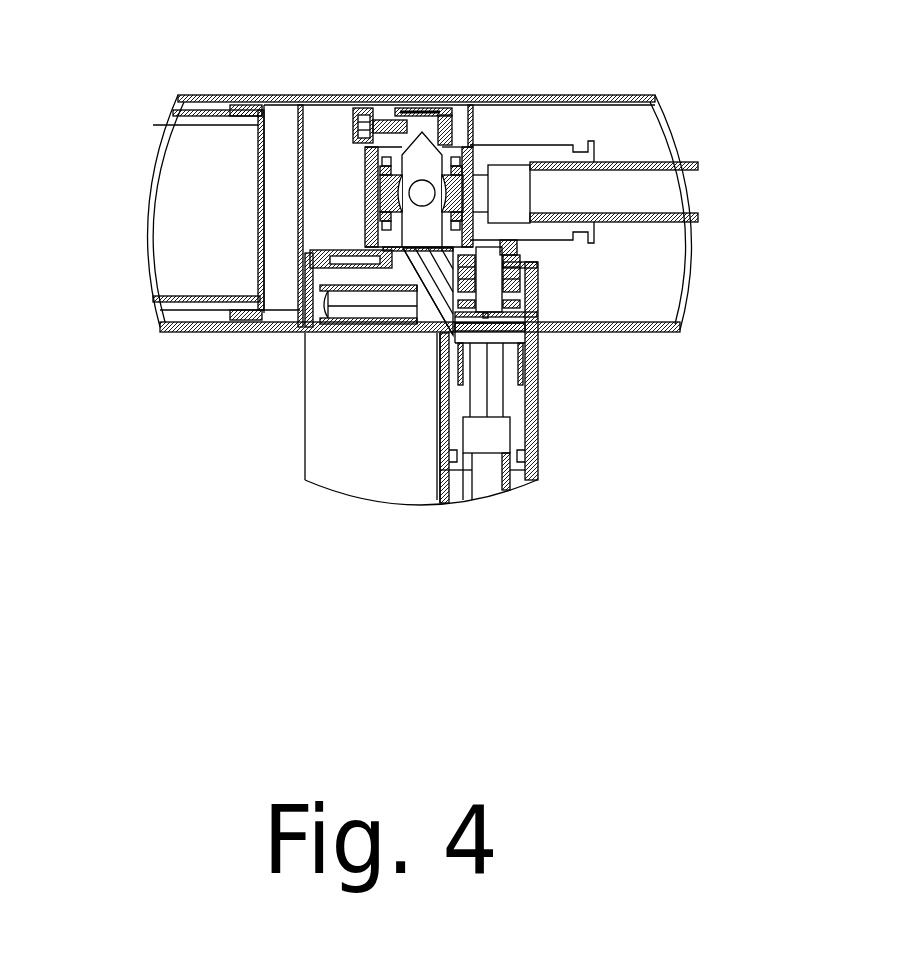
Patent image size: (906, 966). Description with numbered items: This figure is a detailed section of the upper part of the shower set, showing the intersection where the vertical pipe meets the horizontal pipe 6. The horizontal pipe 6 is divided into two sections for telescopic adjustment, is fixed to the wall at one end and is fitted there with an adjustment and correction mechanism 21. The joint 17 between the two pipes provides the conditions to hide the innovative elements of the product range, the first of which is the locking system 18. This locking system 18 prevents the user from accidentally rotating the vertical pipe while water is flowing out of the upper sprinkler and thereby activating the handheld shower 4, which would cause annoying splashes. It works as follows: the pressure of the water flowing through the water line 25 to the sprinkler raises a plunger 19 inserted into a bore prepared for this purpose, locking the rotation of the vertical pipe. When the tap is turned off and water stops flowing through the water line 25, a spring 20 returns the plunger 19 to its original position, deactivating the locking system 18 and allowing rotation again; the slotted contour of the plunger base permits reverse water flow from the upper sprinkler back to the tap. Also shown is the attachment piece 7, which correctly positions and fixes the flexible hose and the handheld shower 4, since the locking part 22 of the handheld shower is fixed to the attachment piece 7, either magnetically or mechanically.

The handheld shower 4 is at (370, 475).
The horizontal pipe 6 is at (655, 97).
The attachment piece 7 is at (340, 305).
The joint 17 is at (293, 292).
The locking system 18 is at (523, 285).
The plunger 19 is at (516, 290).
The spring 20 is at (517, 278).
The adjustment and correction mechanism 21 is at (148, 190).
The locking part 22 is at (400, 340).
The water line 25 is at (488, 485).